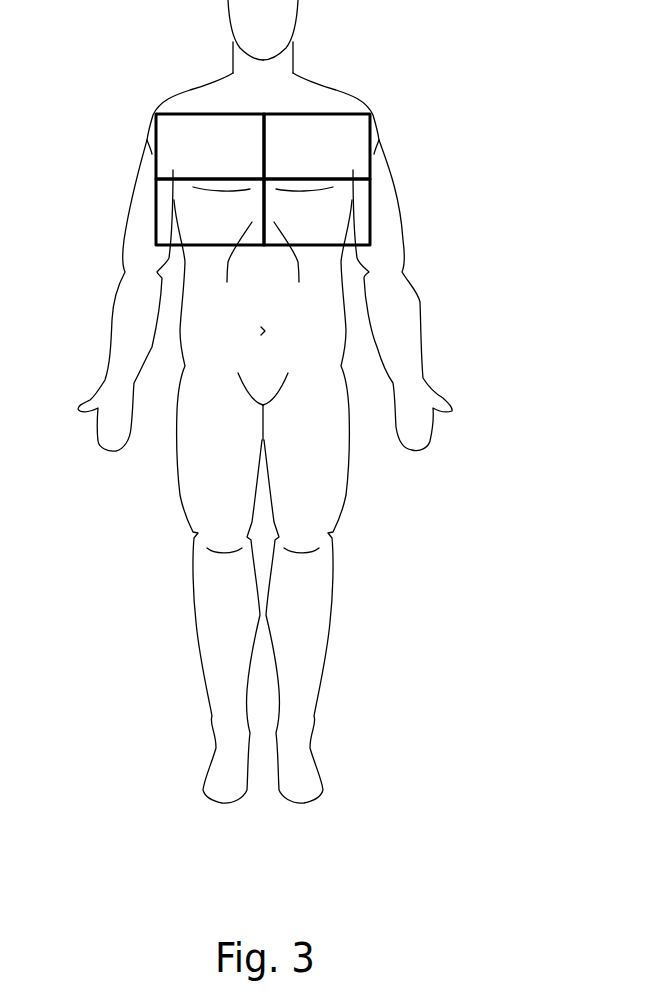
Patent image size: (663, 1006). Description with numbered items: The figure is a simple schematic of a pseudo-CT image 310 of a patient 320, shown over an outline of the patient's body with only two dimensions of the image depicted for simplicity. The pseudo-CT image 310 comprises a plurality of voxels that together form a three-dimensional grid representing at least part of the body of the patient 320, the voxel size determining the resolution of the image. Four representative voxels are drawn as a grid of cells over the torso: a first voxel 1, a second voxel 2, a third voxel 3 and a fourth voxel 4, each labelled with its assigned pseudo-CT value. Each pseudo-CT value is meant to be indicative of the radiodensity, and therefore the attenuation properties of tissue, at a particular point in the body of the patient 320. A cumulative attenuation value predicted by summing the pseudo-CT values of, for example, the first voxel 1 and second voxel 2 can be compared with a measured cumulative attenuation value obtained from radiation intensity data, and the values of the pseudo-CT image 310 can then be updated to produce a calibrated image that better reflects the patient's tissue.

The pseudo-CT image 310 is at (253, 128).
The patient 320 is at (336, 537).
The first voxel 1 is at (210, 146).
The second voxel 2 is at (317, 146).
The third voxel 3 is at (210, 212).
The fourth voxel 4 is at (317, 212).